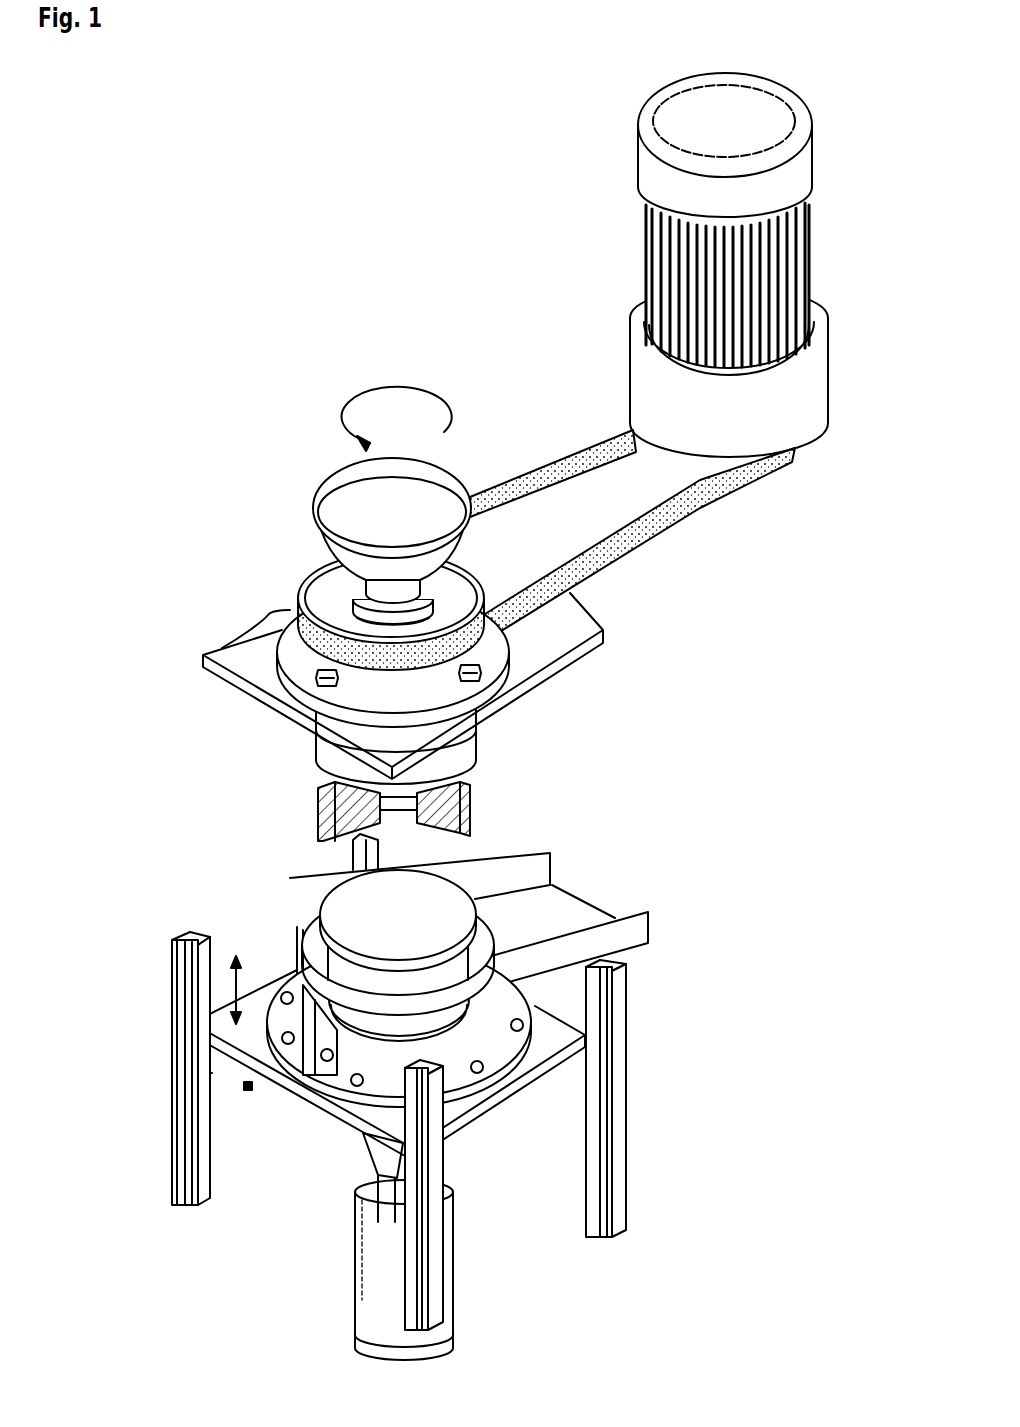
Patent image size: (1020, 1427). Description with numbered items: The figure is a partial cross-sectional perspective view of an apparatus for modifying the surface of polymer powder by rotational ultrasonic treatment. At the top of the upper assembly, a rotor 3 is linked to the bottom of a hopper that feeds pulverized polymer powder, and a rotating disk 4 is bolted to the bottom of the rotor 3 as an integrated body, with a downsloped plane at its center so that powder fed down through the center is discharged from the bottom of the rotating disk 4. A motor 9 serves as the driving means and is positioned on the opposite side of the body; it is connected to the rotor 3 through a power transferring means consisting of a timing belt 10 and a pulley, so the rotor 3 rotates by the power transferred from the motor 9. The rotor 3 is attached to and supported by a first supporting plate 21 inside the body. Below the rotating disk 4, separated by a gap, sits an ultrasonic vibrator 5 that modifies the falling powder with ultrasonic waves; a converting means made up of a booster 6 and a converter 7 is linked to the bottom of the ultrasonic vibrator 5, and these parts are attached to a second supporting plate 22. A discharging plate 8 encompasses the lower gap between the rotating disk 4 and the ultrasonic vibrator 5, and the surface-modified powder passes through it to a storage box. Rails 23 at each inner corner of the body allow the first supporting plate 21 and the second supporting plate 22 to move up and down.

The rotor 3 is at (493, 728).
The rotating disk 4 is at (475, 812).
The ultrasonic vibrator 5 is at (352, 900).
The booster 6 is at (365, 1155).
The converter 7 is at (370, 1286).
The discharging plate 8 is at (567, 907).
The motor 9 is at (647, 234).
The timing belt 10 is at (568, 455).
The first supporting plate 21 is at (598, 622).
The second supporting plate 22 is at (552, 1030).
The rails 23 is at (622, 1107).